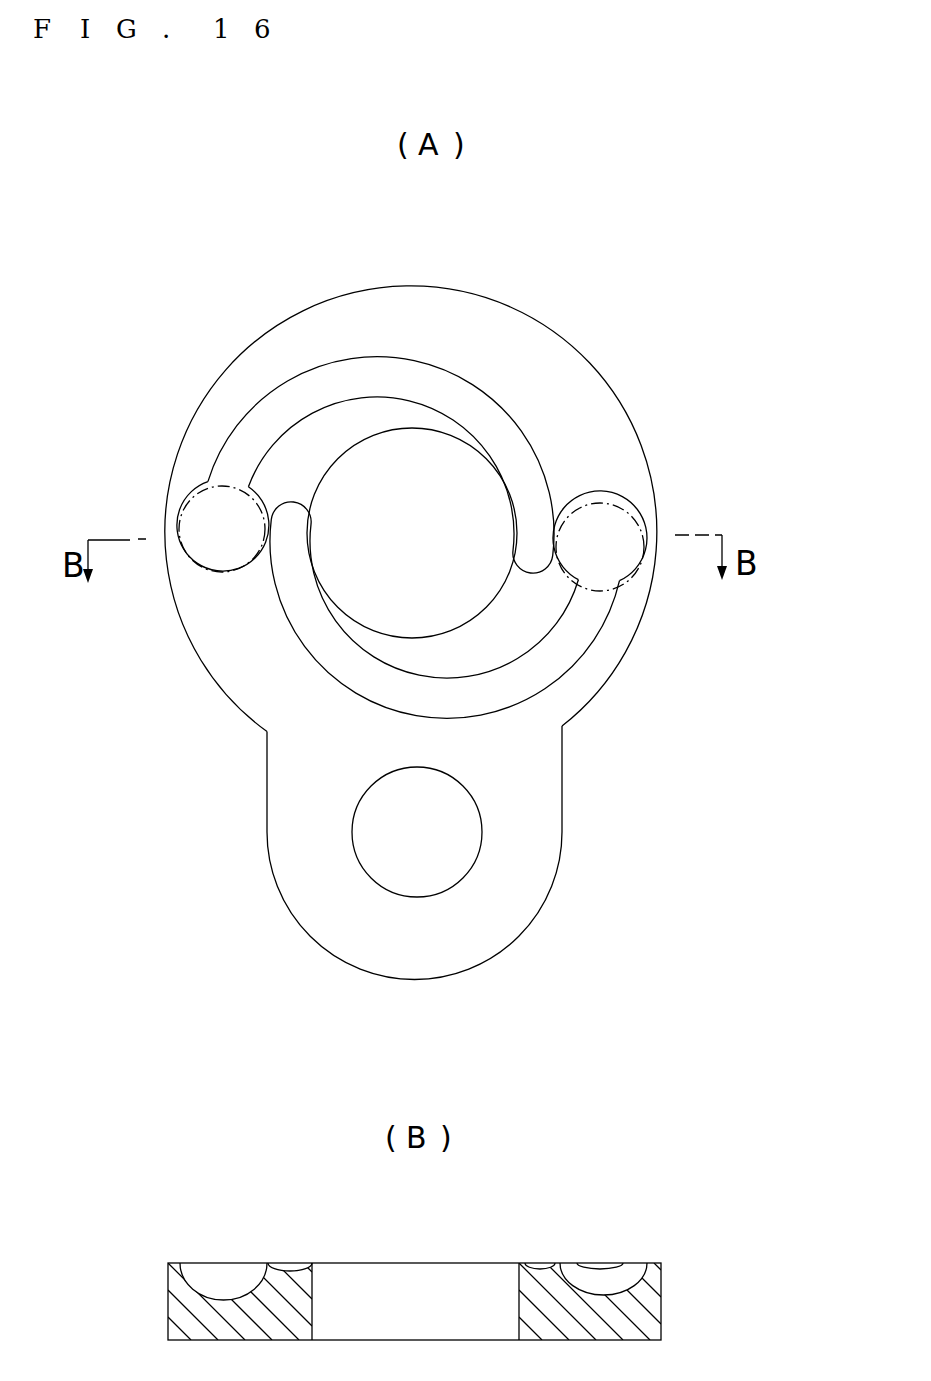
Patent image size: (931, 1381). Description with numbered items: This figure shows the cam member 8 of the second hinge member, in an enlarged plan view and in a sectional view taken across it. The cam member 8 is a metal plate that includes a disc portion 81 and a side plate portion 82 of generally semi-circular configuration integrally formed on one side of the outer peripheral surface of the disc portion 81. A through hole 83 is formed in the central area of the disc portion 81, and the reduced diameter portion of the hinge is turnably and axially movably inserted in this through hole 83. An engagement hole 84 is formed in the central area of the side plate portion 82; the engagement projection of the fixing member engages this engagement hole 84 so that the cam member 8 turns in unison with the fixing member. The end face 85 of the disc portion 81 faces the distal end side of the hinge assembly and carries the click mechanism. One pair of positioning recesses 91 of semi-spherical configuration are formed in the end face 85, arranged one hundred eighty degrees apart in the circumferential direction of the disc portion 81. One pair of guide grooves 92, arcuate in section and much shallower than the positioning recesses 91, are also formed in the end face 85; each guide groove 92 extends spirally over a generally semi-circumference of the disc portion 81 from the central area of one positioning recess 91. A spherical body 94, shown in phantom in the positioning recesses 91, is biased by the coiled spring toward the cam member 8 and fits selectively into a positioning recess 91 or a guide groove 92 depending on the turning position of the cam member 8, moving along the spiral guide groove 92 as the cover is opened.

The cam member 8 is at (467, 781).
The disc portion 81 is at (612, 390).
The side plate portion 82 is at (522, 933).
The through hole 83 is at (390, 440).
The engagement hole 84 is at (365, 859).
The end face 85 is at (590, 438).
The positioning recess 91 is at (621, 527).
The guide groove 92 is at (453, 385).
The spherical body 94 is at (188, 492).